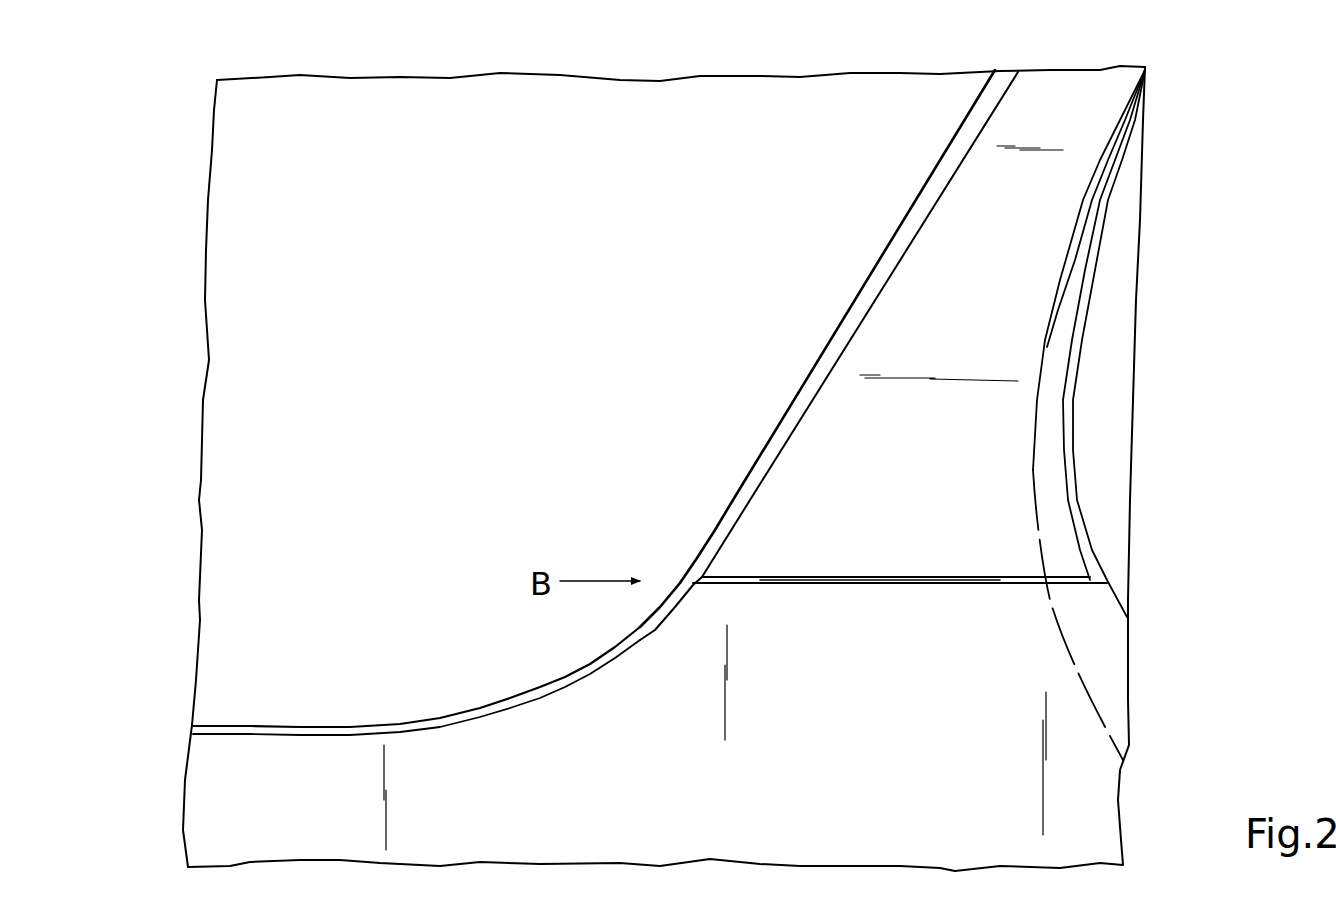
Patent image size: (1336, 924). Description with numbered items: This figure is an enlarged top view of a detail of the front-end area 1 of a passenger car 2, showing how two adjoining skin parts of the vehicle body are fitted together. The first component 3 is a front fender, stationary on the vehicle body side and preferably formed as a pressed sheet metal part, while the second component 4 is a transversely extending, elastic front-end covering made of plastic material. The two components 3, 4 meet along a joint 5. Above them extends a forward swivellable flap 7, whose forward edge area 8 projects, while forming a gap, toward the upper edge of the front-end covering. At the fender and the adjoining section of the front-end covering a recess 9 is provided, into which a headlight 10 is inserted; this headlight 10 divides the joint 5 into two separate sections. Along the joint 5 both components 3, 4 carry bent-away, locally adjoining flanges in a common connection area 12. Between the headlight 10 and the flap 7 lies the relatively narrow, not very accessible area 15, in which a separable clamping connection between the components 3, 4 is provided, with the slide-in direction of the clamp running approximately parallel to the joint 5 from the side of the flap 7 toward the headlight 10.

The front-end area 1 is at (180, 742).
The passenger car 2 is at (940, 62).
The first component 3 is at (1020, 518).
The second component 4 is at (1077, 765).
The joint 5 is at (1030, 583).
The flap 7 is at (480, 107).
The forward edge area 8 is at (290, 723).
The recess 9 is at (1112, 292).
The headlight 10 is at (1097, 372).
The connection area 12 is at (857, 586).
The area 15 is at (942, 621).